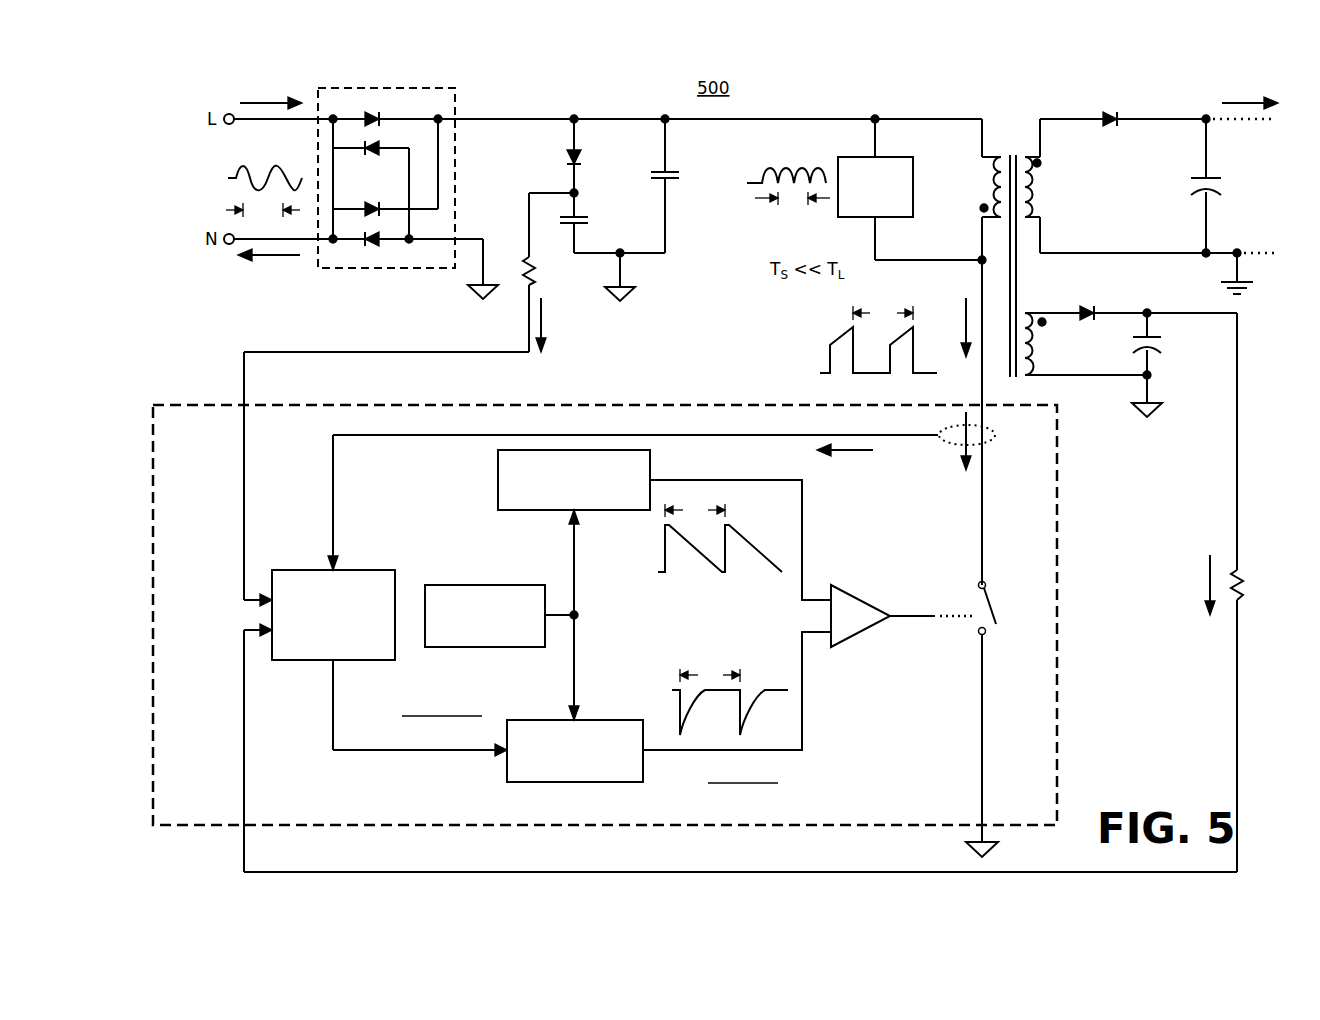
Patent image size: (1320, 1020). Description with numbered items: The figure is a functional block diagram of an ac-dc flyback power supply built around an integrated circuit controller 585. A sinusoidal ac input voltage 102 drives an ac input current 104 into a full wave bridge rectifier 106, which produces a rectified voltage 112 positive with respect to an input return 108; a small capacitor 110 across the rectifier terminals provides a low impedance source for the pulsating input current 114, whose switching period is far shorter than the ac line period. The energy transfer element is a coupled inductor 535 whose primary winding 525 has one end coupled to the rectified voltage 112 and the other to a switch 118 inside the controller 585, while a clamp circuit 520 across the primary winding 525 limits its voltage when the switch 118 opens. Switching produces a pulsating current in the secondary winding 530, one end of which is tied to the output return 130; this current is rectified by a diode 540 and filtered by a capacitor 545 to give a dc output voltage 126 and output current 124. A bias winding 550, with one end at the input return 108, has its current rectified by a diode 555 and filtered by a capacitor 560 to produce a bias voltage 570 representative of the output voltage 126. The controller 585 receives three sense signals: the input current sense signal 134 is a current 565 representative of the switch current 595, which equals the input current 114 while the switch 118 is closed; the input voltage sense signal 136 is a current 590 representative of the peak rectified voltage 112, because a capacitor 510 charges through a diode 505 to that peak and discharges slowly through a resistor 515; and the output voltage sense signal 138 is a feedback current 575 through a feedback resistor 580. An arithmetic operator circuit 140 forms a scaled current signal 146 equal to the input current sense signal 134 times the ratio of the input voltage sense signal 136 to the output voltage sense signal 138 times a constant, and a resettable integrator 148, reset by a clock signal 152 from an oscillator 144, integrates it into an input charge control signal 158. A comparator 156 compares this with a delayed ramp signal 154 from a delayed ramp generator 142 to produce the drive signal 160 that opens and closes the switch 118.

The ac input voltage 102 is at (210, 163).
The ac input current 104 is at (262, 96).
The full wave bridge rectifier 106 is at (372, 280).
The input return 108 is at (482, 306).
The capacitor C1 110 is at (655, 158).
The rectified voltage 112 is at (716, 167).
The input current 114 is at (958, 308).
The switch S1 118 is at (990, 592).
The output current 124 is at (1230, 92).
The output voltage 126 is at (1160, 193).
The output return 130 is at (1250, 293).
The input current sense signal 134 is at (325, 508).
The input voltage sense signal 136 is at (228, 547).
The output voltage sense signal 138 is at (237, 673).
The arithmetic operator circuit 140 is at (333, 615).
The delayed ramp generator 142 is at (490, 472).
The oscillator 144 is at (488, 577).
The scaled current signal 146 is at (325, 705).
The resettable integrator 148 is at (548, 717).
The clock signal 152 is at (580, 593).
The delayed ramp signal 154 is at (805, 525).
The comparator 156 is at (857, 635).
The input charge control signal 158 is at (810, 733).
The drive signal 160 is at (915, 618).
The diode 505 is at (560, 158).
The capacitor C2 510 is at (583, 235).
The resistor R1 515 is at (542, 273).
The clamp circuit 520 is at (912, 189).
The primary winding 525 is at (988, 185).
The secondary winding 530 is at (1037, 184).
The coupled inductor T1 535 is at (1030, 275).
The diode D1 540 is at (1110, 128).
The capacitor C3 545 is at (1228, 175).
The bias winding 550 is at (1045, 345).
The diode 555 is at (1097, 310).
The bias capacitor 560 is at (1140, 363).
The current I_S 565 is at (860, 458).
The bias voltage 570 is at (1182, 362).
The feedback current 575 is at (1202, 562).
The feedback resistor 580 is at (1248, 572).
The integrated circuit controller 585 is at (725, 395).
The current I_RECT 590 is at (550, 333).
The current I_D 595 is at (958, 475).